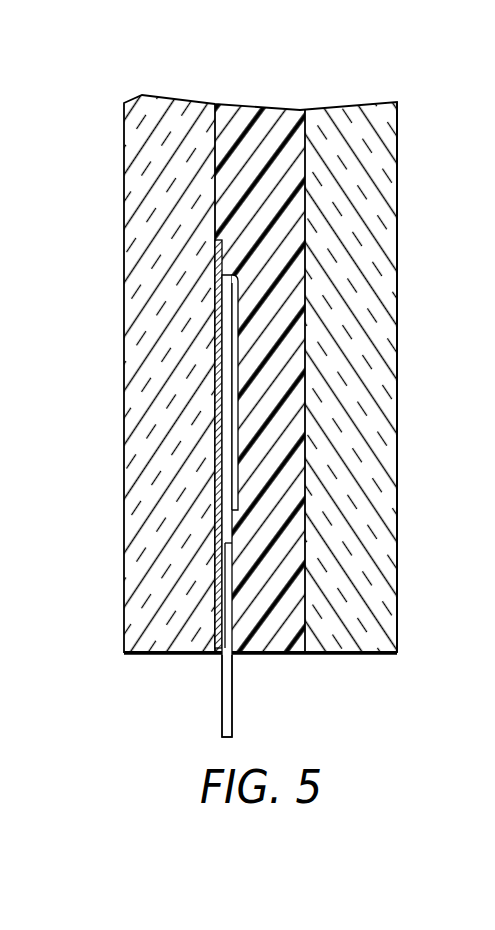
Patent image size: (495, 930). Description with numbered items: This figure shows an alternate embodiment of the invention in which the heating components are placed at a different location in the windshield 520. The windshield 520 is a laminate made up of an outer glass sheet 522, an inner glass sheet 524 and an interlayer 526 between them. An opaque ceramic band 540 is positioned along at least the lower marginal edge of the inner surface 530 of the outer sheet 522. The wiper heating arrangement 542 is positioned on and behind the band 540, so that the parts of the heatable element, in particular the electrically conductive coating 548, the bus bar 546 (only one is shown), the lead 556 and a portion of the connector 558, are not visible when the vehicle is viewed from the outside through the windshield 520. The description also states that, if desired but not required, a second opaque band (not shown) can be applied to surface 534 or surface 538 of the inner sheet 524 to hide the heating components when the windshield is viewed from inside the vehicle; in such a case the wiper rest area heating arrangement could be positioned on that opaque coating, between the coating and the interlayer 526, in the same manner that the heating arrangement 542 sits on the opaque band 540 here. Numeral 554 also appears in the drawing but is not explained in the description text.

The windshield 520 is at (130, 673).
The outer glass sheet 522 is at (170, 107).
The inner glass sheet 524 is at (361, 105).
The interlayer 526 is at (258, 110).
The inner surface 530 is at (216, 158).
The surface 534 is at (311, 146).
The surface 538 is at (398, 616).
The opaque ceramic band 540 is at (215, 275).
The wiper heating arrangement 542 is at (260, 330).
The bus bar 546 is at (238, 285).
The electrically conductive coating 548 is at (222, 328).
The contact portion 554 is at (238, 444).
The lead 556 is at (232, 562).
The connector 558 is at (233, 695).